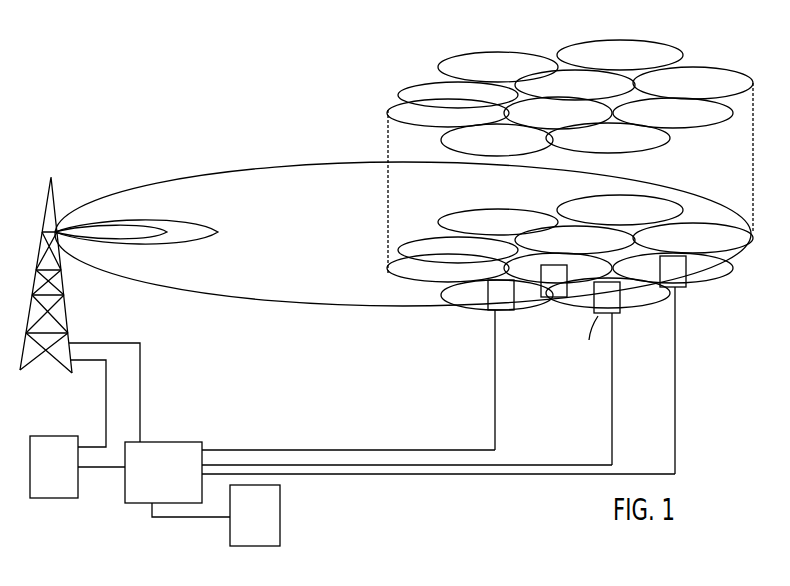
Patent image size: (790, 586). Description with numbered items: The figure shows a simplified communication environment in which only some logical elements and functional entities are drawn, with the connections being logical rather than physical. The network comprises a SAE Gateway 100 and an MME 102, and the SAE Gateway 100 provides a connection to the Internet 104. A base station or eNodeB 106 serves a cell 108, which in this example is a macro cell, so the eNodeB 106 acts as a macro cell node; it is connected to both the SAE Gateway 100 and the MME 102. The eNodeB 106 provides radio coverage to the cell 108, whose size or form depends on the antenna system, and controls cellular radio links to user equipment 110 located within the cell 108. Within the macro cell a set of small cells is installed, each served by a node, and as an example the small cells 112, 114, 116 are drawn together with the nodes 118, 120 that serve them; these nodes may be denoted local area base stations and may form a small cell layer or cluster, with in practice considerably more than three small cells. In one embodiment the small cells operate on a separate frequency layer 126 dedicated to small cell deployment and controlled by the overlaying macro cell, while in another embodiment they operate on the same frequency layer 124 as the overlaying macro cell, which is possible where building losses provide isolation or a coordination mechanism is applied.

The SAE Gateway 100 is at (168, 440).
The MME 102 is at (48, 433).
The Internet 104 is at (230, 525).
The eNodeB 106 is at (63, 303).
The cell 108 is at (363, 307).
The user equipment 110 is at (560, 298).
The small cell 112 is at (534, 307).
The small cell 114 is at (712, 282).
The small cell 116 is at (647, 307).
The node 118 is at (489, 312).
The node 120 is at (682, 288).
The frequency layer 124 is at (367, 233).
The separate frequency layer 126 is at (332, 103).